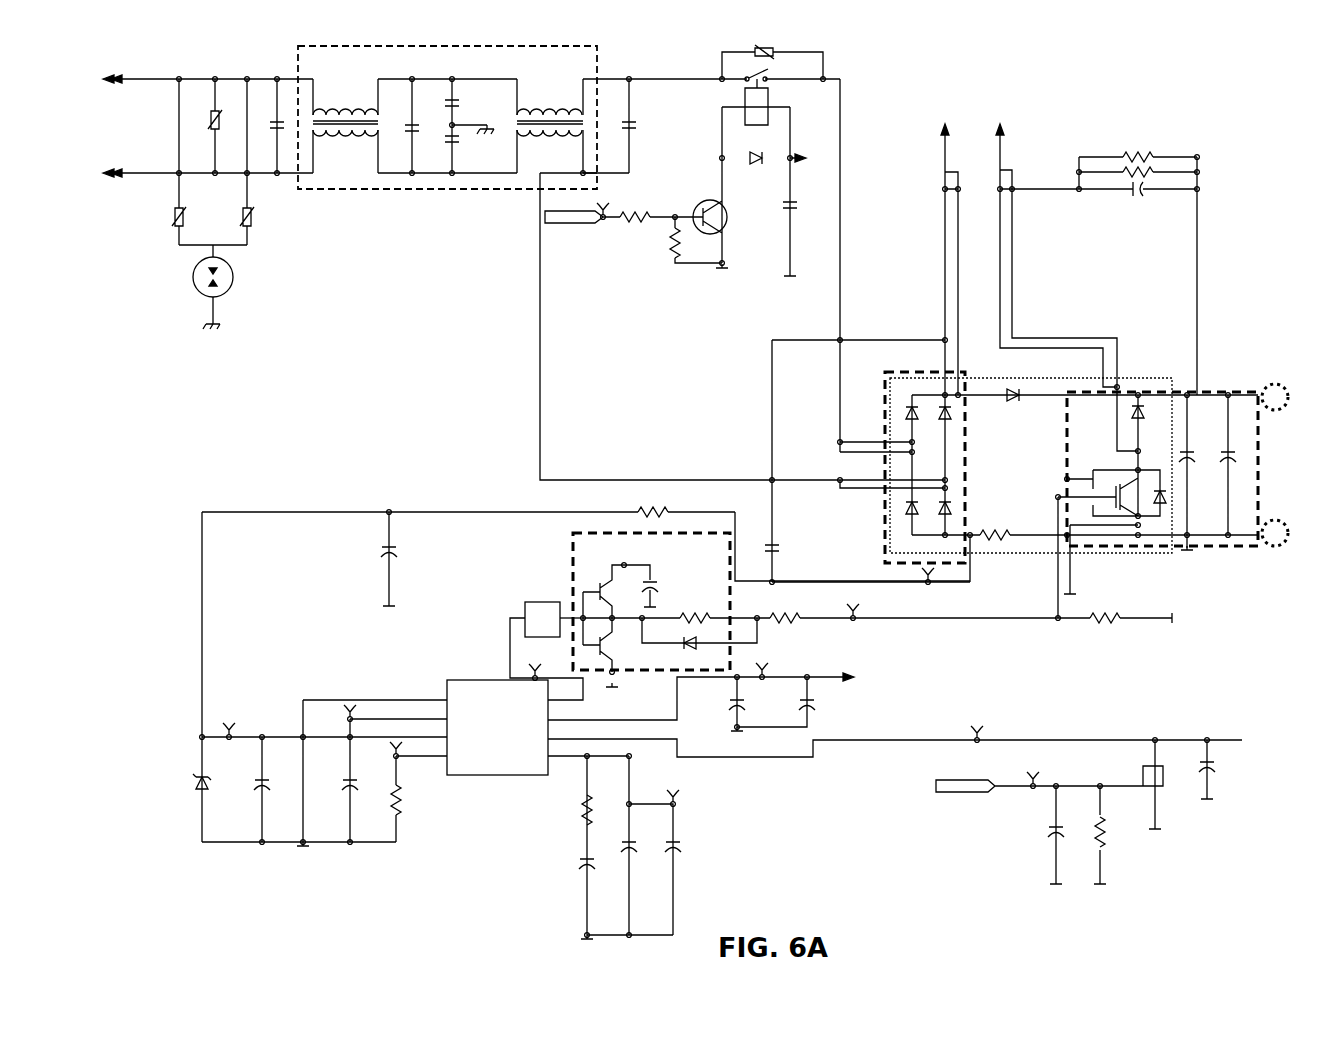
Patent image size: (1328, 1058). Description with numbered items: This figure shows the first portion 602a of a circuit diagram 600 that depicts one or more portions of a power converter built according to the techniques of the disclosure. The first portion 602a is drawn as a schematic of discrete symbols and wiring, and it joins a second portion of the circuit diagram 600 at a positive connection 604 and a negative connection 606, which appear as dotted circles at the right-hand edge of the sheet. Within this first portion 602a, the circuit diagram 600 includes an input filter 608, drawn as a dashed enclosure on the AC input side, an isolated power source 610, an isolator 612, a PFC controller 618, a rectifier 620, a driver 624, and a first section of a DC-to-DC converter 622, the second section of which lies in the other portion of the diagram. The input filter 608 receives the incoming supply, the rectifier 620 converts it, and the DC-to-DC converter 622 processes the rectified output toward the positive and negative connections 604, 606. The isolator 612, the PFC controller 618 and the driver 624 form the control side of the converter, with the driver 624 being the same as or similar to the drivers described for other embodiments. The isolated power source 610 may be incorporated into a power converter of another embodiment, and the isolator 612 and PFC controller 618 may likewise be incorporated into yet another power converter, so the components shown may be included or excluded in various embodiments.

The circuit diagram 600 is at (1133, 100).
The first portion 602a is at (1271, 125).
The positive connection 604 is at (1282, 384).
The negative connection 606 is at (1272, 546).
The input filter 608 is at (403, 215).
The isolated power source 610 is at (476, 458).
The isolator 612 is at (525, 603).
The PFC controller 618 is at (447, 680).
The rectifier 620 is at (893, 372).
The DC-to-DC converter 622 is at (1148, 392).
The driver 624 is at (573, 560).